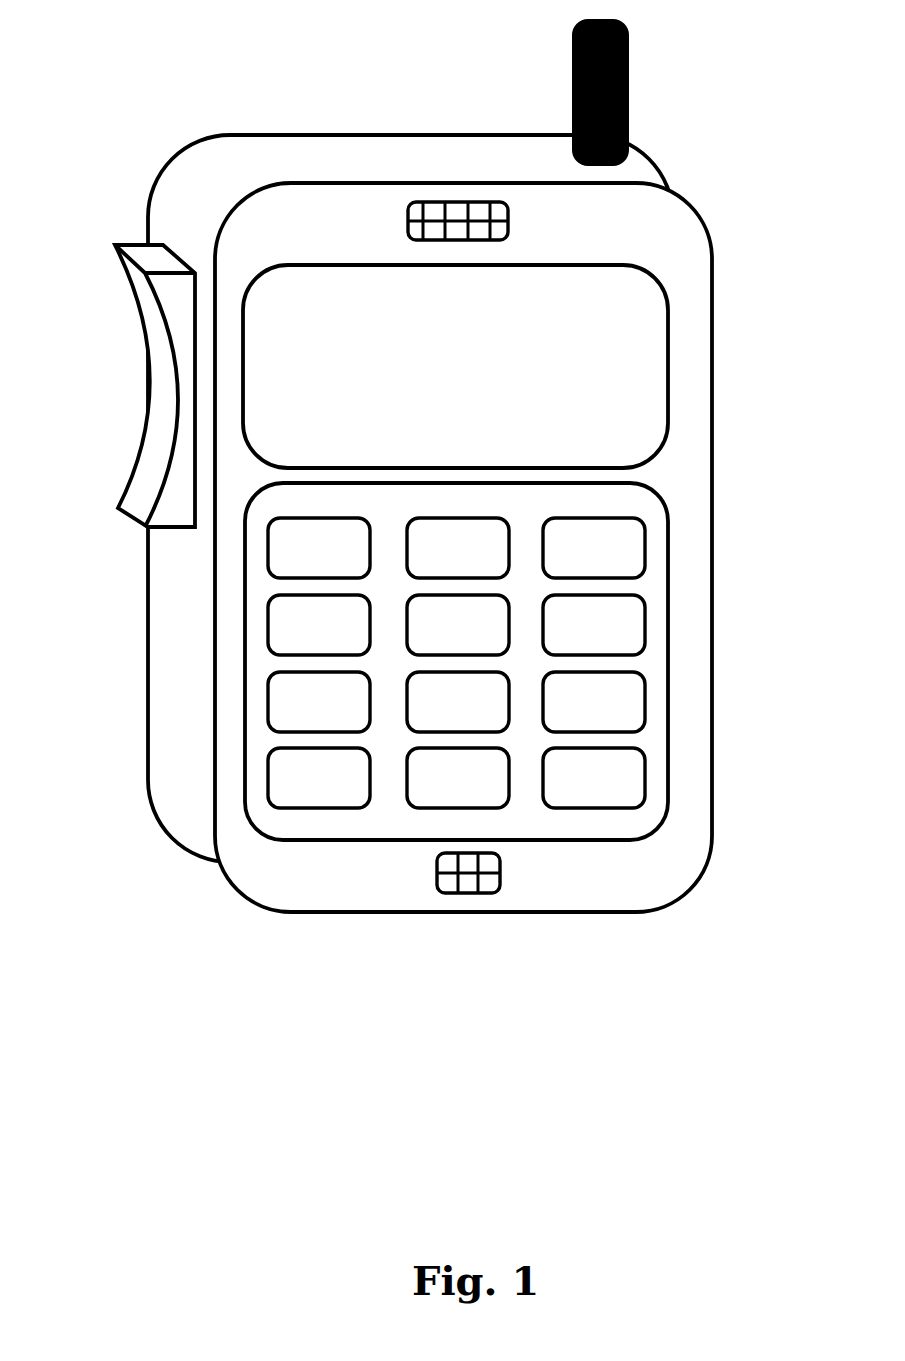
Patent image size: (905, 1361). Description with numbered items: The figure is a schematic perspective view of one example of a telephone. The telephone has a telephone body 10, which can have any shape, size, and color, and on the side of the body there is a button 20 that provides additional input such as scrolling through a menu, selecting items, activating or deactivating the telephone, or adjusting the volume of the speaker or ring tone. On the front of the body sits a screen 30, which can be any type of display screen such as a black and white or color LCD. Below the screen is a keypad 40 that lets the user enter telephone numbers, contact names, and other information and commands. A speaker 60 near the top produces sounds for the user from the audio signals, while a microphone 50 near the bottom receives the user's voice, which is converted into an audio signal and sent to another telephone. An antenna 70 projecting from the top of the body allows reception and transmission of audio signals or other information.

The telephone body 10 is at (148, 693).
The button 20 is at (148, 395).
The screen 30 is at (668, 414).
The keypad 40 is at (668, 651).
The microphone 50 is at (500, 877).
The speaker 60 is at (508, 224).
The antenna 70 is at (628, 90).